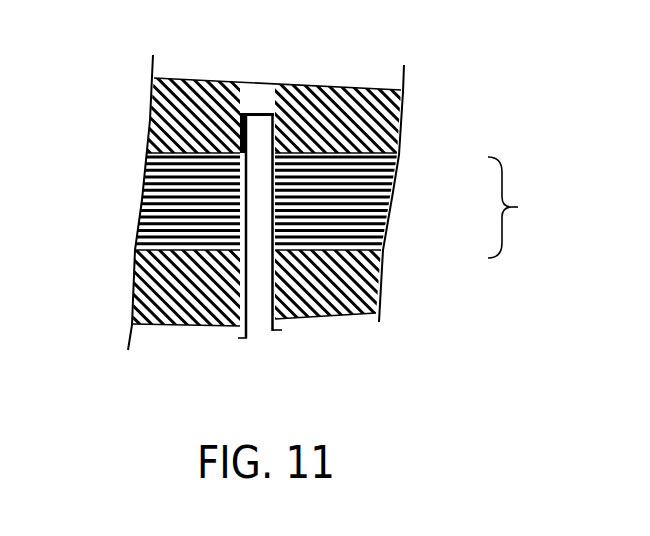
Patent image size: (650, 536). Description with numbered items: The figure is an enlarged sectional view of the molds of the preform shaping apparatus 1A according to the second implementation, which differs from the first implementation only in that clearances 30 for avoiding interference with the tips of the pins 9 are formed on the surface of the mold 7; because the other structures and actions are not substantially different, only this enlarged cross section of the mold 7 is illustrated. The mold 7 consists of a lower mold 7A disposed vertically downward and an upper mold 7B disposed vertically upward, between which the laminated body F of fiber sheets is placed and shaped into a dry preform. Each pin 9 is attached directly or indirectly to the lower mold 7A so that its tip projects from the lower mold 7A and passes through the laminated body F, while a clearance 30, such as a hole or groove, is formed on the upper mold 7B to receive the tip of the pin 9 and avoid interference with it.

The preform shaping apparatus 1A is at (81, 72).
The mold 7 is at (517, 207).
The lower mold 7A is at (365, 287).
The upper mold 7B is at (385, 118).
The laminated body of fiber sheets F is at (151, 205).
The clearance 30 is at (265, 112).
The pin 9 is at (255, 322).